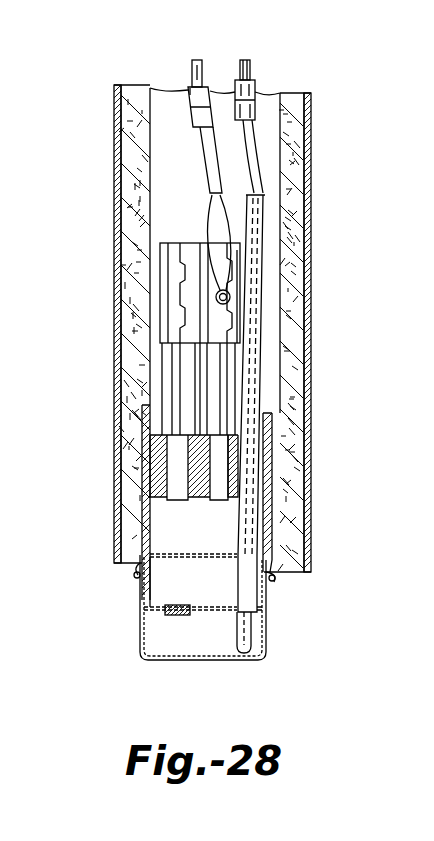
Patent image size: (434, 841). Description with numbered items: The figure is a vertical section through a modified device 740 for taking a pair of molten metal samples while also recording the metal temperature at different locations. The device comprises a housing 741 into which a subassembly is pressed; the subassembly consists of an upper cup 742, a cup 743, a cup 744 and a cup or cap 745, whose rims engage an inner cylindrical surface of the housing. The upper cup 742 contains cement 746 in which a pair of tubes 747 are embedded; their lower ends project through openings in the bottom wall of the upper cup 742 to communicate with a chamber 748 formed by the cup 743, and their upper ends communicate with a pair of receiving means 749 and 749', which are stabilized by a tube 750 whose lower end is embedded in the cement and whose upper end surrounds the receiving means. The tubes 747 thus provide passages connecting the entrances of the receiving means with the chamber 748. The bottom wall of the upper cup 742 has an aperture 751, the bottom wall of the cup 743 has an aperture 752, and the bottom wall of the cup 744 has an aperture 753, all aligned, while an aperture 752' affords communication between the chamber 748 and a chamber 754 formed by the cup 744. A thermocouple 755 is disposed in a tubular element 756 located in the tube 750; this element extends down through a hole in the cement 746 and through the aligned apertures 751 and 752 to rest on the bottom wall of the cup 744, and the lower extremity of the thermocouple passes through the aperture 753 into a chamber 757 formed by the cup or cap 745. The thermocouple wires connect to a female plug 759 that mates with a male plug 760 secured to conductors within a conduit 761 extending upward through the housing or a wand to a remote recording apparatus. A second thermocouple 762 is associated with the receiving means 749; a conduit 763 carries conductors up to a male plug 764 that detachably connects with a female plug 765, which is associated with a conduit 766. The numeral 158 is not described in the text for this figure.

The modified device 740 is at (118, 85).
The housing 741 is at (302, 94).
The upper cup 742 is at (270, 433).
The cup 743 is at (264, 517).
The cup 744 is at (266, 570).
The cup or cap 745 is at (267, 622).
The cement 746 is at (142, 456).
The tubes 747 is at (210, 503).
The chamber 748 is at (140, 519).
The receiving means 749 is at (265, 284).
The receiving means 749' is at (197, 242).
The tube 750 is at (148, 369).
The aperture 751 is at (235, 502).
The aperture 752 is at (193, 572).
The aperture 752' is at (172, 582).
The aperture 753 is at (232, 617).
The chamber 754 is at (170, 593).
The thermocouple 755 is at (278, 588).
The tubular element 756 is at (263, 308).
The chamber 757 is at (157, 628).
The female plug 759 is at (258, 114).
The thermocouple 158 is at (258, 160).
The male plug 760 is at (250, 93).
The conduit 761 is at (248, 60).
The thermocouple 762 is at (230, 282).
The conduit 763 is at (210, 155).
The male plug 764 is at (197, 120).
The female plug 765 is at (190, 90).
The conduit 766 is at (198, 62).